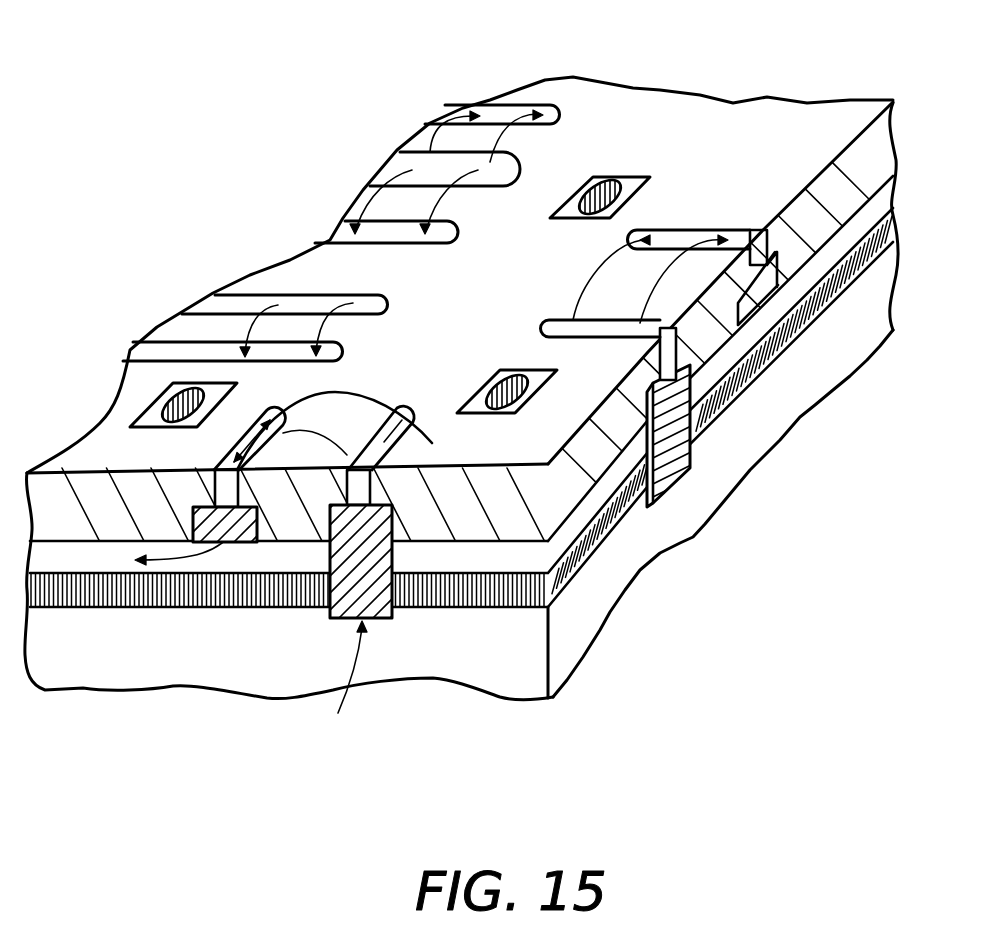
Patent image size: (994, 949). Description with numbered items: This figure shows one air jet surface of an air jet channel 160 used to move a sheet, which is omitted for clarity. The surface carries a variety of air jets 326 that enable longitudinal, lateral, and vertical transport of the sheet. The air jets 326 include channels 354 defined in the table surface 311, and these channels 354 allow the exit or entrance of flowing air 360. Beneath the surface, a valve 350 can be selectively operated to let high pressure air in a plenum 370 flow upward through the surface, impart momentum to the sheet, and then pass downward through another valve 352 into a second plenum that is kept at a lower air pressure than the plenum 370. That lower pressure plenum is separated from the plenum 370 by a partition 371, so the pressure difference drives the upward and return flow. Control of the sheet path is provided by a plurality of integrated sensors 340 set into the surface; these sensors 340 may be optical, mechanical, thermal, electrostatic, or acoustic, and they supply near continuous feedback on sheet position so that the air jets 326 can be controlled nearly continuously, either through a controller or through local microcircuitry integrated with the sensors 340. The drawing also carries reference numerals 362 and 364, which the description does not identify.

The air jet channel 160 is at (335, 150).
The air jets 326 is at (228, 277).
The table surface 311 is at (734, 103).
The sensors 340 is at (614, 178).
The flowing air 360 is at (352, 393).
The channels 354 is at (408, 428).
The partition 371 is at (87, 607).
The insulating layer 364 is at (200, 600).
The valve 352 is at (247, 542).
The valve 350 is at (330, 614).
The direction arrow 362 is at (341, 684).
The plenum 370 is at (500, 678).